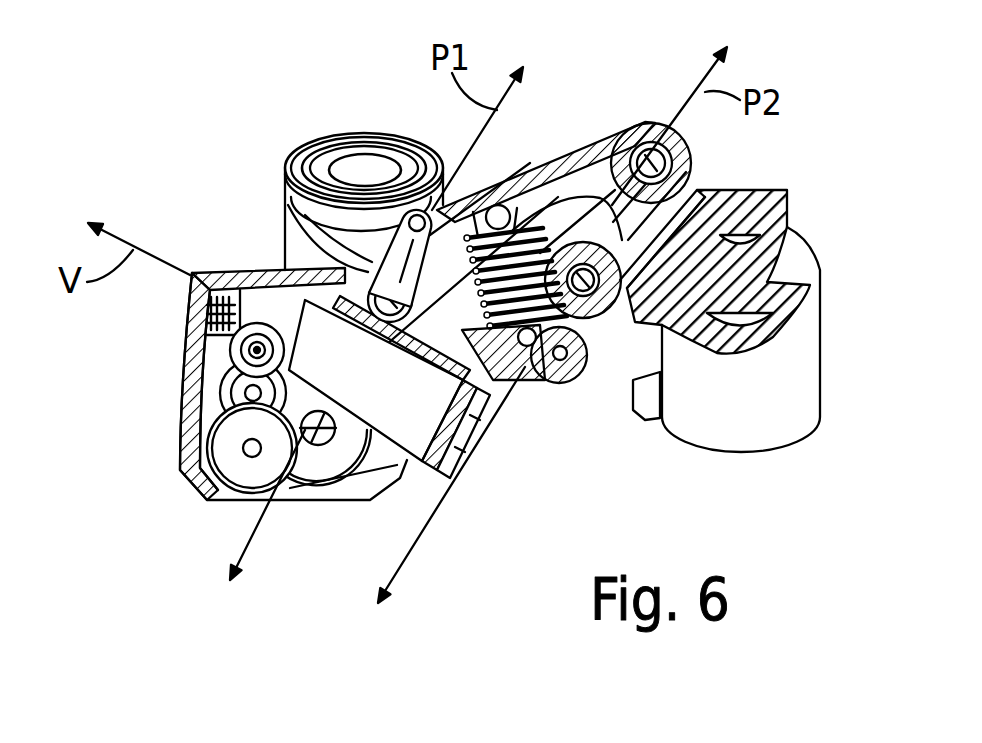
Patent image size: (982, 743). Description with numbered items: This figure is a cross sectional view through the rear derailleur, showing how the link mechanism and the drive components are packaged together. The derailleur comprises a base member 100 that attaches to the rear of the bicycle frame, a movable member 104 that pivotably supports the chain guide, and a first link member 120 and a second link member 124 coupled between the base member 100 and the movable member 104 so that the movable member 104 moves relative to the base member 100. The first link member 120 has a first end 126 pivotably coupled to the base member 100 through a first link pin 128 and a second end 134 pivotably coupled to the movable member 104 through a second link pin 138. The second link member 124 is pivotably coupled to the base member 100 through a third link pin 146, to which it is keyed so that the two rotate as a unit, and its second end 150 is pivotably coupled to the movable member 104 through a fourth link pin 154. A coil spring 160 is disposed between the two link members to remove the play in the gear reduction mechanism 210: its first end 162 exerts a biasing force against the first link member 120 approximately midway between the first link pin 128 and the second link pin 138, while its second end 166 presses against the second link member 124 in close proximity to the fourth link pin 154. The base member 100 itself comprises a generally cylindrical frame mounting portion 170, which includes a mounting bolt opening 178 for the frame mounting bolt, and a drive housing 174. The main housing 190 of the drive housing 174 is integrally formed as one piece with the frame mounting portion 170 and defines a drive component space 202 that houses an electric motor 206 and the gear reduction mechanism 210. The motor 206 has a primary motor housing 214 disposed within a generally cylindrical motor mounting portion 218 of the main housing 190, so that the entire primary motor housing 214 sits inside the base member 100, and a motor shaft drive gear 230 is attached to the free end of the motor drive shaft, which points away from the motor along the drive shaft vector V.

The base member 100 is at (118, 169).
The movable member 104 is at (807, 330).
The first link member 120 is at (585, 150).
The second link member 124 is at (505, 373).
The first end 126 is at (345, 266).
The first link pin 128 is at (325, 270).
The second end 134 is at (650, 128).
The second link pin 138 is at (653, 163).
The third link pin 146 is at (319, 410).
The second end 150 is at (567, 377).
The fourth link pin 154 is at (578, 352).
The spring 160 is at (533, 225).
The first end 162 is at (470, 185).
The second end 166 is at (525, 370).
The frame mounting portion 170 is at (297, 160).
The drive housing 174 is at (166, 353).
The mounting bolt opening 178 is at (365, 170).
The main housing 190 is at (200, 298).
The drive component space 202 is at (210, 383).
The electric motor 206 is at (430, 412).
The gear reduction mechanism 210 is at (231, 477).
The primary motor housing 214 is at (445, 450).
The motor mounting portion 218 is at (437, 487).
The motor shaft drive gear 230 is at (250, 290).